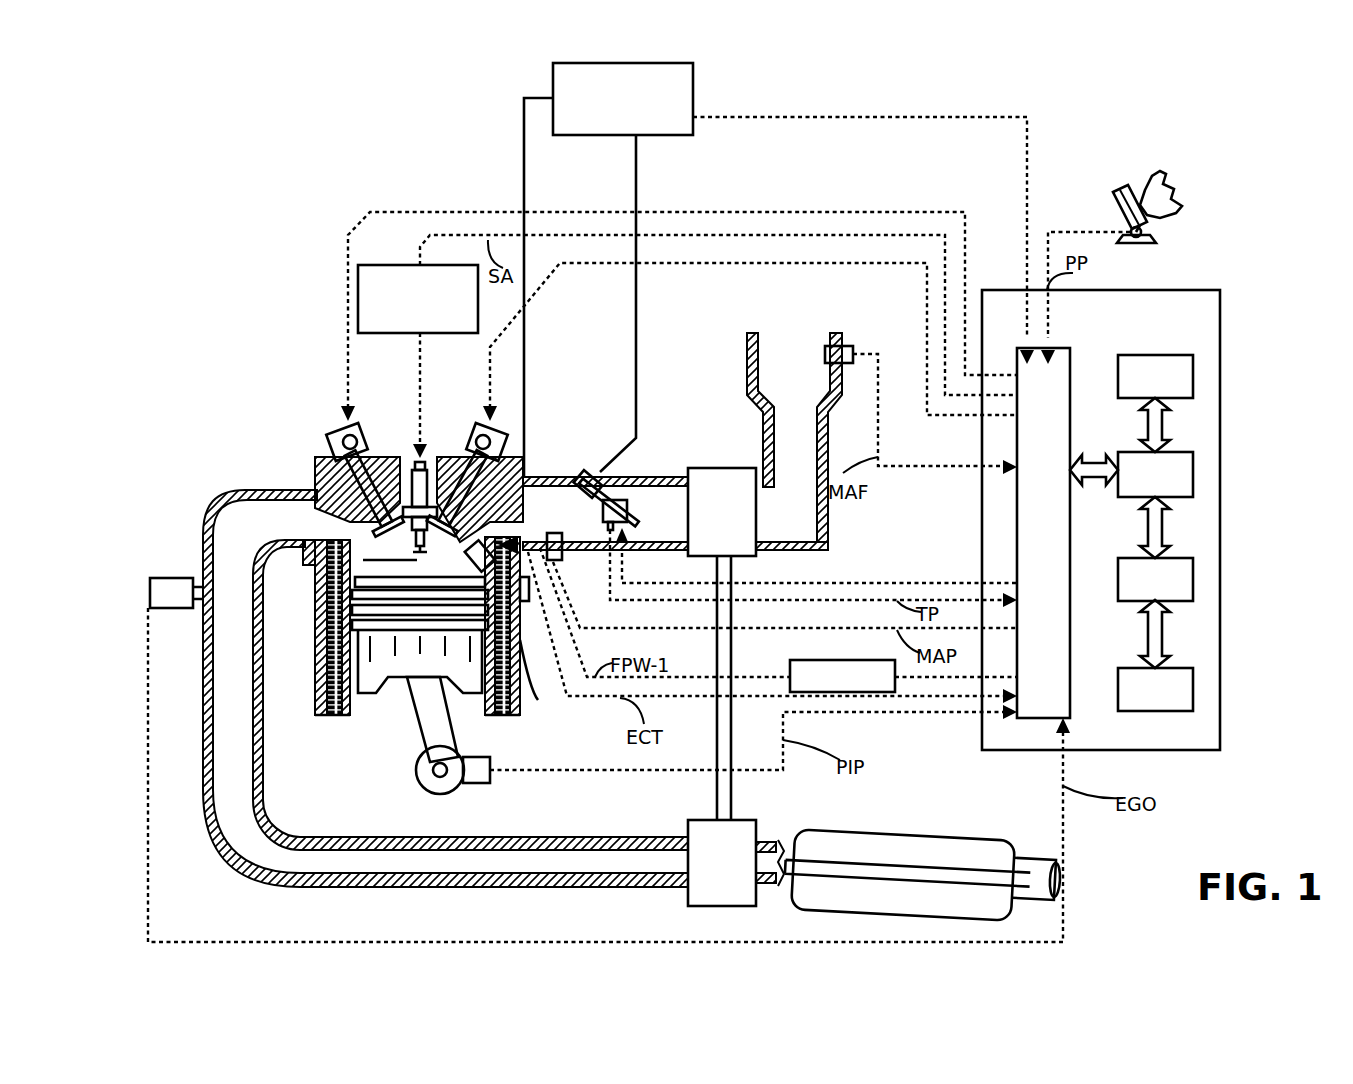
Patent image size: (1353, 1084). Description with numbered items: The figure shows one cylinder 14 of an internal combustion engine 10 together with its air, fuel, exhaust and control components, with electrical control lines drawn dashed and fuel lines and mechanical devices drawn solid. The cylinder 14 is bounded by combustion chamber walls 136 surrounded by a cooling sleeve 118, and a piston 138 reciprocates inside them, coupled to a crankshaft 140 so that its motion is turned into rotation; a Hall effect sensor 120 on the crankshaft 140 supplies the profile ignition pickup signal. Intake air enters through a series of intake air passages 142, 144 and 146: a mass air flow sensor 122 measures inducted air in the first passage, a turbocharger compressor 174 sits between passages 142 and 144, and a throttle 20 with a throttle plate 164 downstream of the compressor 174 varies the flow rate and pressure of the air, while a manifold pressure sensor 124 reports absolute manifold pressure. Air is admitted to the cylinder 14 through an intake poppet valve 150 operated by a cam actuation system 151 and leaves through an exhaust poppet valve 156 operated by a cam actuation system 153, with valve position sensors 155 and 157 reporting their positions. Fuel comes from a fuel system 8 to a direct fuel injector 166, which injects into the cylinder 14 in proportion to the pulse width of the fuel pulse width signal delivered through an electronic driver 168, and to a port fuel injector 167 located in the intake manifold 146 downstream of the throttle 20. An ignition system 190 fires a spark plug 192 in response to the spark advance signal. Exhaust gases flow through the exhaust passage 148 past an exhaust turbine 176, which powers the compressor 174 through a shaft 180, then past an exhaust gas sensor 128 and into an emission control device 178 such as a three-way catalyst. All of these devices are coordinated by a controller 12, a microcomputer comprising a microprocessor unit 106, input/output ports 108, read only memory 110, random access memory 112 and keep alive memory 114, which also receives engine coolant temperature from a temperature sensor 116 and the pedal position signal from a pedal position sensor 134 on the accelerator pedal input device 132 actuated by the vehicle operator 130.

The fuel system 8 is at (693, 76).
The internal combustion engine 10 is at (236, 333).
The controller 12 is at (1220, 318).
The cylinder 14 is at (325, 588).
The throttle 20 is at (607, 482).
The microprocessor unit (CPU) 106 is at (1195, 470).
The input/output ports 108 is at (1070, 355).
The read only memory (ROM) 110 is at (1195, 372).
The random access memory (RAM) 112 is at (1195, 582).
The keep alive memory (KAM) 114 is at (1195, 690).
The temperature sensor 116 is at (538, 660).
The cooling sleeve 118 is at (520, 680).
The Hall effect sensor 120 is at (490, 784).
The MAF sensor 122 is at (846, 346).
The MAP sensor 124 is at (556, 565).
The exhaust gas sensor 128 is at (150, 586).
The vehicle operator 130 is at (1165, 193).
The input device 132 is at (1113, 202).
The pedal position sensor 134 is at (1148, 228).
The combustion chamber walls 136 is at (353, 718).
The piston 138 is at (400, 675).
The crankshaft 140 is at (432, 787).
The intake air passage 142 is at (813, 386).
The intake air passage 144 is at (683, 529).
The intake air passage (intake manifold) 146 is at (593, 534).
The exhaust passage 148 is at (302, 535).
The intake poppet valve 150 is at (465, 515).
The cam actuation system 151 is at (480, 430).
The cam actuation system 153 is at (353, 432).
The valve position sensor 155 is at (496, 443).
The exhaust poppet valve 156 is at (372, 527).
The valve position sensor 157 is at (343, 440).
The throttle plate 164 is at (625, 500).
The fuel injector 166 is at (505, 545).
The fuel injector 167 is at (588, 470).
The electronic driver 168 is at (792, 660).
The compressor 174 is at (702, 468).
The exhaust turbine 176 is at (688, 892).
The emission control device 178 is at (972, 838).
The shaft 180 is at (720, 777).
The ignition system 190 is at (378, 265).
The spark plug 192 is at (414, 493).